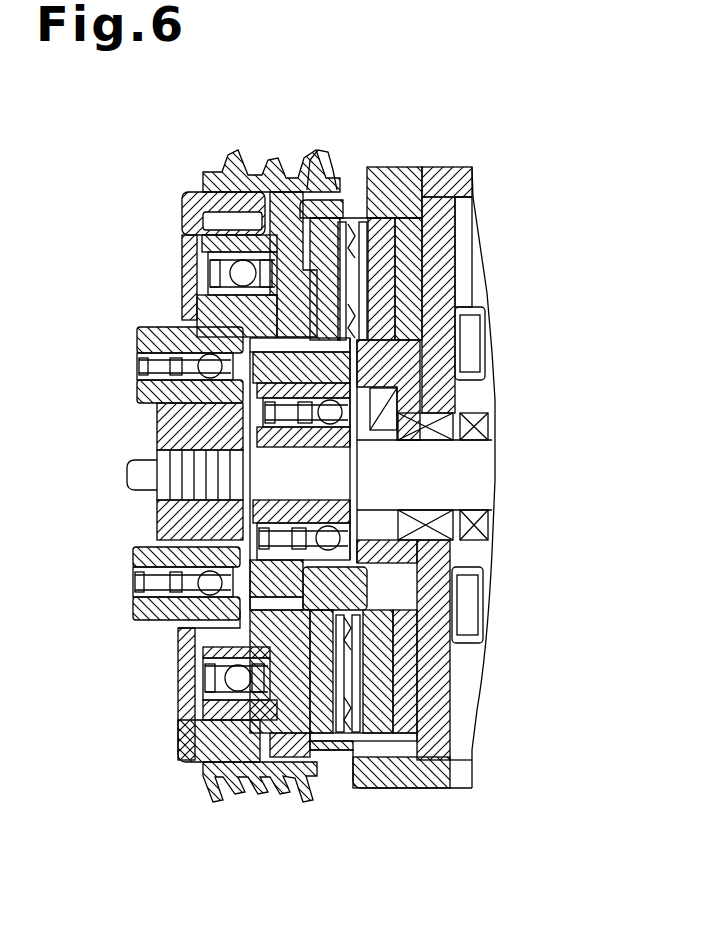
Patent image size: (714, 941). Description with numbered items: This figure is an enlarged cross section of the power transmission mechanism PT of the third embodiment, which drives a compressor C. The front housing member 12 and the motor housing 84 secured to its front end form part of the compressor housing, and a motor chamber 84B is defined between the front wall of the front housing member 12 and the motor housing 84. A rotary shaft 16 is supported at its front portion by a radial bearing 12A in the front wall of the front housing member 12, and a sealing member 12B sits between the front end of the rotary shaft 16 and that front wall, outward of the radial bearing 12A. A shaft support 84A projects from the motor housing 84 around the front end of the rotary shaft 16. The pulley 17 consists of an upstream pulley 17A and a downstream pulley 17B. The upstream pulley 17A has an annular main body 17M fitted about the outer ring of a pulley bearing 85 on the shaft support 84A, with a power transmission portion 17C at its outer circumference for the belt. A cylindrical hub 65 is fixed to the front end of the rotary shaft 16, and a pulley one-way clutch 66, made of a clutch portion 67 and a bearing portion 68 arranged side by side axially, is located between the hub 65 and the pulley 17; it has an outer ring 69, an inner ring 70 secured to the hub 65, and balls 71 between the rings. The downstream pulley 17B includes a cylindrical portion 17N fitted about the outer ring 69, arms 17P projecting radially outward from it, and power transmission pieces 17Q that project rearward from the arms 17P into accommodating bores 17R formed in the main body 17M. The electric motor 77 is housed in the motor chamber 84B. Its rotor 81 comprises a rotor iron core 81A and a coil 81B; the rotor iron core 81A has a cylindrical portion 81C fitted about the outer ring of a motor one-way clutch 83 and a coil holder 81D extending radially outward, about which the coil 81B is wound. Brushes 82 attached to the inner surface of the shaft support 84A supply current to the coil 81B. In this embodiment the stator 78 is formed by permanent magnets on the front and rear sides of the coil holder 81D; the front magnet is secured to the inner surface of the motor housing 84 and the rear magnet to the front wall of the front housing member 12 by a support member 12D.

The power train PT is at (153, 153).
The compressor C is at (514, 154).
The front housing member 12 is at (457, 166).
The radial bearing 12A is at (477, 442).
The sealing member 12B is at (410, 442).
The support member 12D is at (467, 232).
The rotary shaft 16 is at (494, 497).
The pulley 17 is at (217, 175).
The upstream pulley 17A is at (326, 170).
The downstream pulley 17B is at (178, 720).
The power transmission portion 17C is at (262, 170).
The main body 17M is at (217, 243).
The cylindrical portion 17N is at (180, 630).
The arms 17P is at (185, 690).
The power transmission pieces 17Q is at (200, 757).
The accommodating bores 17R is at (207, 787).
The hub 65 is at (158, 430).
The pulley one-way clutch 66 is at (136, 572).
The clutch portion 67 is at (273, 515).
The bearing portion 68 is at (336, 510).
The outer ring 69 is at (150, 607).
The inner ring 70 is at (255, 487).
The balls 71 is at (314, 515).
The electric motor 77 is at (376, 745).
The stator 78 is at (383, 292).
The rotor 81 is at (455, 365).
The rotor iron core 81A is at (480, 370).
The coil 81B is at (343, 223).
The cylindrical portion 81C is at (365, 395).
The coil holder 81D is at (365, 262).
The brushes 82 is at (270, 344).
The motor one-way clutch 83 is at (297, 505).
The motor housing 84 is at (413, 166).
The shaft support 84A is at (215, 297).
The motor chamber 84B is at (455, 610).
The pulley bearing 85 is at (238, 271).